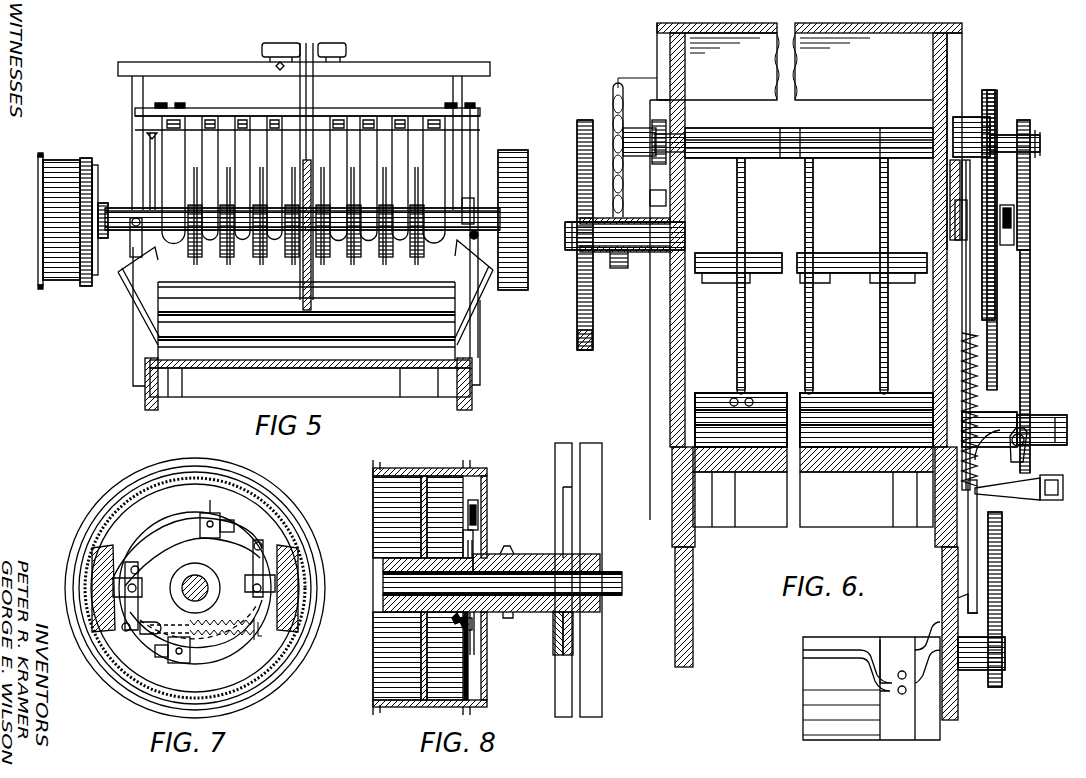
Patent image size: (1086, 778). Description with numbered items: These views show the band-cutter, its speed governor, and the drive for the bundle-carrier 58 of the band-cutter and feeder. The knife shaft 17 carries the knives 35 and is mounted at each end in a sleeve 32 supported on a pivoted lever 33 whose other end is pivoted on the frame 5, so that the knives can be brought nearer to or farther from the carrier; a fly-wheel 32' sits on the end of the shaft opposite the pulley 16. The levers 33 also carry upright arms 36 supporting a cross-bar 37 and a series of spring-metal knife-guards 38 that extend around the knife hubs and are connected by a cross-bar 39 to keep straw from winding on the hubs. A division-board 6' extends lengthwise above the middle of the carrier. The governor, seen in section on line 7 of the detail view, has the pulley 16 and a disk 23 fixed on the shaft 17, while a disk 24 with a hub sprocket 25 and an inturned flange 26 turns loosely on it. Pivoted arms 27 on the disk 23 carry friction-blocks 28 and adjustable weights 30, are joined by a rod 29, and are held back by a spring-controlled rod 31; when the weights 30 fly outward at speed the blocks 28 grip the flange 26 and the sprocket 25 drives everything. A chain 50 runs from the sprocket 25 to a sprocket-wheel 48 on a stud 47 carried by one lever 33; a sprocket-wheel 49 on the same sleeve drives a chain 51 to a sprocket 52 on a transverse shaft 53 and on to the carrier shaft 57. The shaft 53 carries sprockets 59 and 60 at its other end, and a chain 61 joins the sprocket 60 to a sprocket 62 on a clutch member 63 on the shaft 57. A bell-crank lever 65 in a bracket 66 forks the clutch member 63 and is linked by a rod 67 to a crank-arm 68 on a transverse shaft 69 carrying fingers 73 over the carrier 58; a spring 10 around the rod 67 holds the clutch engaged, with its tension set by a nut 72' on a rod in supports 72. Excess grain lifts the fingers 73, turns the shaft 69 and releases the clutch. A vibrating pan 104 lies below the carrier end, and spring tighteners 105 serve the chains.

In FIG. 5, the frame 5 is at (146, 396).
In FIG. 6, the frame 5 is at (694, 547).
In FIG. 5, the division-board 6' is at (306, 296).
In FIG. 8, the section line 7 is at (462, 450).
In FIG. 6, the spring 10 is at (980, 356).
In FIG. 7, the pulley 16 is at (293, 520).
In FIG. 8, the pulley 16 is at (388, 644).
In FIG. 7, the shaft 17 is at (180, 586).
In FIG. 8, the shaft 17 is at (612, 574).
In FIG. 7, the disk 23 is at (195, 578).
In FIG. 8, the disk 23 is at (470, 668).
In FIG. 8, the disk 24 is at (478, 536).
In FIG. 5, the sprocket 25 is at (112, 240).
In FIG. 8, the sprocket 25 is at (512, 616).
In FIG. 5, the inturned flange 26 is at (58, 288).
In FIG. 7, the inturned flange 26 is at (258, 495).
In FIG. 8, the inturned flange 26 is at (475, 478).
In FIG. 7, the pivoted arms 27 is at (140, 606).
In FIG. 8, the pivoted arms 27 is at (480, 546).
In FIG. 7, the friction-blocks 28 is at (108, 548).
In FIG. 7, the rod 29 is at (215, 552).
In FIG. 7, the adjustable weight 30 is at (186, 672).
In FIG. 8, the adjustable weight 30 is at (485, 507).
In FIG. 7, the spring-controlled rod 31 is at (150, 636).
In FIG. 8, the spring-controlled rod 31 is at (456, 626).
In FIG. 5, the sleeve 32 is at (302, 219).
In FIG. 8, the sleeve 32 is at (513, 600).
In FIG. 5, the fly-wheel 32' is at (529, 220).
In FIG. 5, the pivoted lever 33 is at (150, 248).
In FIG. 6, the pivoted lever 33 is at (686, 232).
In FIG. 5, the knives 35 is at (194, 258).
In FIG. 5, the upright arms 36 is at (138, 145).
In FIG. 5, the cross-bar 37 is at (188, 108).
In FIG. 5, the knife-guards 38 is at (250, 118).
In FIG. 6, the knife-guards 38 is at (718, 284).
In FIG. 6, the cross-bar 39 is at (840, 250).
In FIG. 6, the stud 47 is at (572, 250).
In FIG. 6, the sprocket-wheel 48 is at (594, 326).
In FIG. 6, the sprocket-wheel 49 is at (616, 268).
In FIG. 6, the sprocket-chain 50 is at (582, 350).
In FIG. 6, the chain 51 is at (625, 200).
In FIG. 6, the sprocket 52 is at (608, 98).
In FIG. 6, the transverse shaft 53 is at (720, 160).
In FIG. 6, the shaft 57 is at (1060, 420).
In FIG. 5, the bundle-carrier 58 is at (306, 321).
In FIG. 6, the bundle-carrier 58 is at (813, 487).
In FIG. 6, the sprocket 59 is at (996, 120).
In FIG. 6, the sprocket 60 is at (1030, 130).
In FIG. 6, the chain 61 is at (1000, 350).
In FIG. 6, the sprocket 62 is at (1030, 410).
In FIG. 6, the clutch member 63 is at (1032, 386).
In FIG. 6, the bell-crank lever 65 is at (1030, 498).
In FIG. 6, the bracket 66 is at (1010, 458).
In FIG. 6, the rod 67 is at (962, 313).
In FIG. 6, the crank-arm 68 is at (975, 120).
In FIG. 6, the transverse shaft 69 is at (725, 130).
In FIG. 6, the supports 72 is at (996, 599).
In FIG. 6, the adjusting-nut 72' is at (997, 546).
In FIG. 6, the rods or fingers 73 is at (754, 206).
In FIG. 6, the vibrating pan 104 is at (871, 681).
In FIG. 6, the tighteners 105 is at (1014, 240).